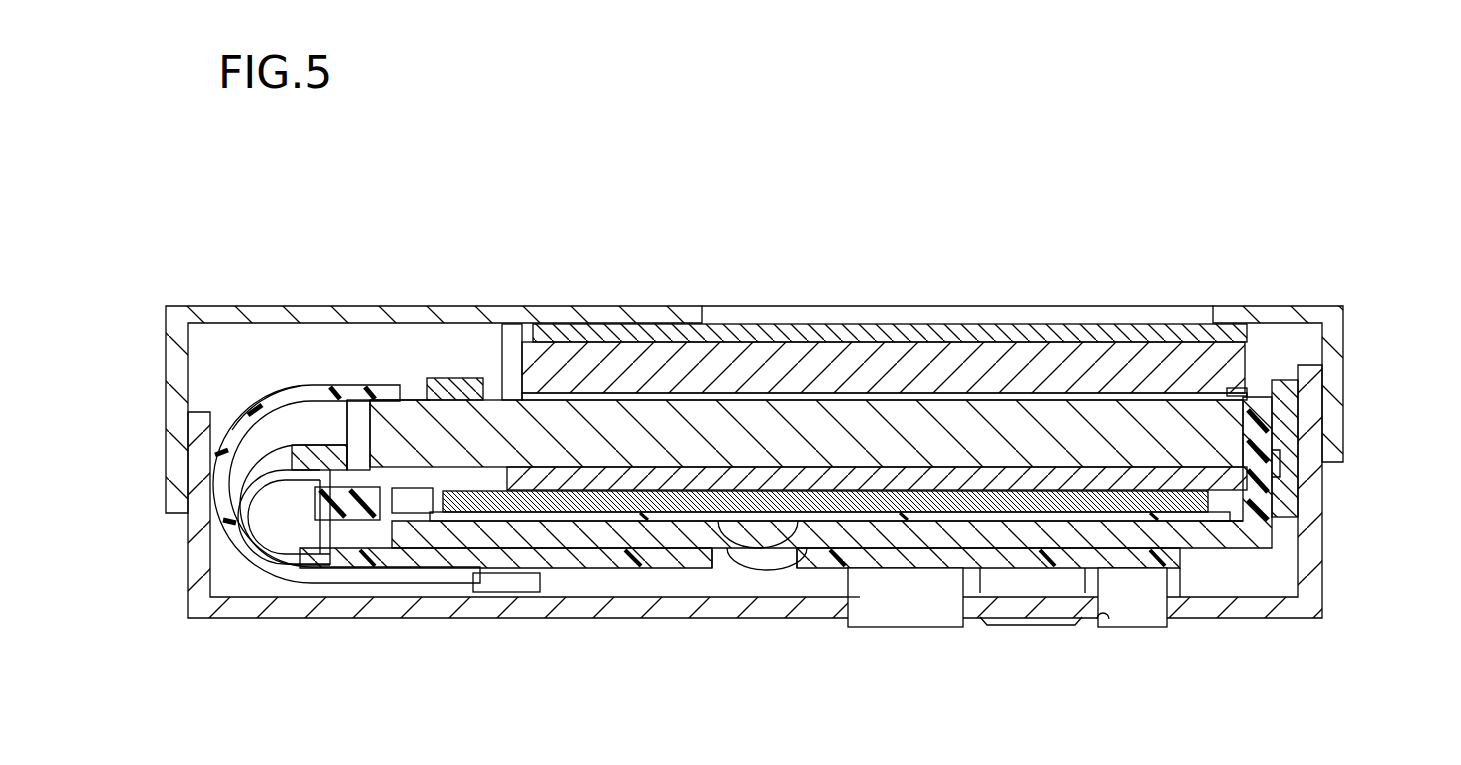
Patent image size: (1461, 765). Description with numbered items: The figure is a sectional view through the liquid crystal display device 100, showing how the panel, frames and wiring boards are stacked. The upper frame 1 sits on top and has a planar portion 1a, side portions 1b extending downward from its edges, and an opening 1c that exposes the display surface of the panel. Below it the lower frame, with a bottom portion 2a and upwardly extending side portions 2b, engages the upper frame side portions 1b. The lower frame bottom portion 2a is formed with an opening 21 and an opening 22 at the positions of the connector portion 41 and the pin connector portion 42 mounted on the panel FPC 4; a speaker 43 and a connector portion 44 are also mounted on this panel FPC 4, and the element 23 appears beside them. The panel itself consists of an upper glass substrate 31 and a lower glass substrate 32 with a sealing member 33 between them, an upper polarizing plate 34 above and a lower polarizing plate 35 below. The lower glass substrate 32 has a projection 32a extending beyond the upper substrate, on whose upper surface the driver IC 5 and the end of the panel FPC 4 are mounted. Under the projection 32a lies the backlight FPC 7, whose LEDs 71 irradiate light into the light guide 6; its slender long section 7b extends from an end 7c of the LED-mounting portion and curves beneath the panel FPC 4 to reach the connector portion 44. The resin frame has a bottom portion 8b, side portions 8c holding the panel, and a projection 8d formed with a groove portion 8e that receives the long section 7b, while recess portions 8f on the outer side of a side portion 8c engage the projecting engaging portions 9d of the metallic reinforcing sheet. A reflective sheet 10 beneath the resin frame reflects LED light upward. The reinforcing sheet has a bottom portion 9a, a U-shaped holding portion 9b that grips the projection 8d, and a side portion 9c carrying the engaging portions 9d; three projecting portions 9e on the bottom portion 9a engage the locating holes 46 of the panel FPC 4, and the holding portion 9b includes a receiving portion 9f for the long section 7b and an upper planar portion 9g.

The imaging device 100 is at (290, 250).
The upper frame 1 is at (754, 363).
The planar portion 1a is at (430, 313).
The side portions 1b is at (173, 398).
The opening 1c is at (1197, 308).
The bottom portion 2a is at (405, 598).
The side portions 2b is at (197, 553).
The panel FPC 4 is at (278, 392).
The driver IC 5 is at (466, 382).
The light guide 6 is at (1022, 502).
The backlight FPC 7 is at (216, 515).
The long section 7b is at (278, 578).
The end 7c is at (338, 522).
The bottom portion 8b is at (1250, 522).
The side portions 8c is at (362, 420).
The projection 8d is at (356, 512).
The groove portion 8e is at (300, 452).
The recess portions 8f is at (1290, 465).
The bottom portion 9a is at (1160, 518).
The U-shaped holding portion 9b is at (310, 560).
The side portion 9c is at (1285, 512).
The projecting engaging portions 9d is at (1270, 455).
The projecting portions 9e is at (757, 575).
The receiving portion 9f is at (228, 548).
The upper planar portion 9g is at (331, 400).
The reflective sheet 10 is at (1077, 518).
The opening 21 is at (853, 600).
The opening 22 is at (1100, 625).
The terminal 23 is at (1032, 625).
The upper glass substrate 31 is at (845, 360).
The lower glass substrate 32 is at (893, 430).
The projection 32a is at (428, 437).
The sealing member 33 is at (526, 395).
The upper polarizing plate 34 is at (762, 336).
The lower polarizing plate 35 is at (960, 478).
The connector portion 41 is at (905, 597).
The pin connector portion 42 is at (1130, 600).
The speaker 43 is at (1032, 582).
The connector portion 44 is at (507, 582).
The locating holes 46 is at (722, 562).
The LEDs 71 is at (417, 506).